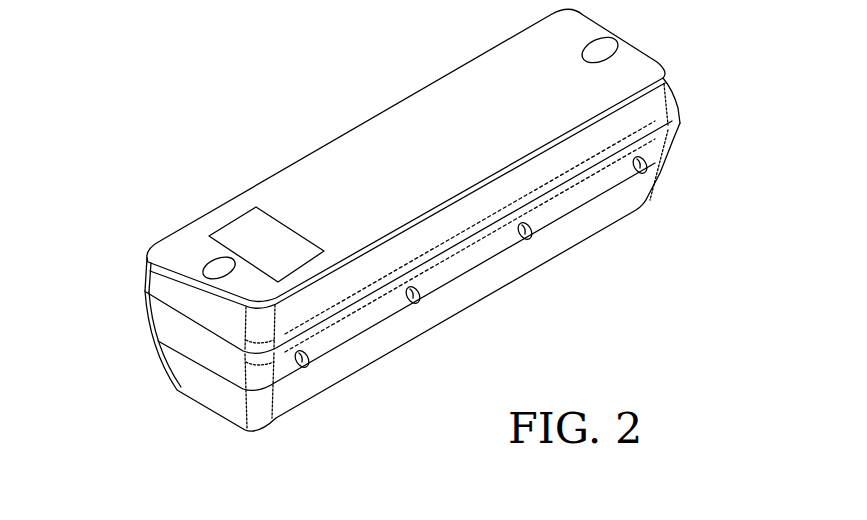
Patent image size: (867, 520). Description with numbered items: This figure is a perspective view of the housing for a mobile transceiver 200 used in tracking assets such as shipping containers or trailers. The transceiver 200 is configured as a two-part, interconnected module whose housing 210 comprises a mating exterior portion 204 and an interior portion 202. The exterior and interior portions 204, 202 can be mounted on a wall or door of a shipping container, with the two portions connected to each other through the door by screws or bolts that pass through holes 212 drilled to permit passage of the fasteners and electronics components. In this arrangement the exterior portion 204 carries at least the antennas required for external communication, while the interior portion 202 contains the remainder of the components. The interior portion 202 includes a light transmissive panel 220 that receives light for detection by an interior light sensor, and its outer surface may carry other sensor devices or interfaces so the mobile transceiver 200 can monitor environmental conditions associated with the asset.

The mobile transceiver 200 is at (222, 77).
The interior portion 202 is at (285, 155).
The exterior portion 204 is at (571, 261).
The housing 210 is at (433, 164).
The holes 212 is at (215, 263).
The window 220 is at (236, 228).